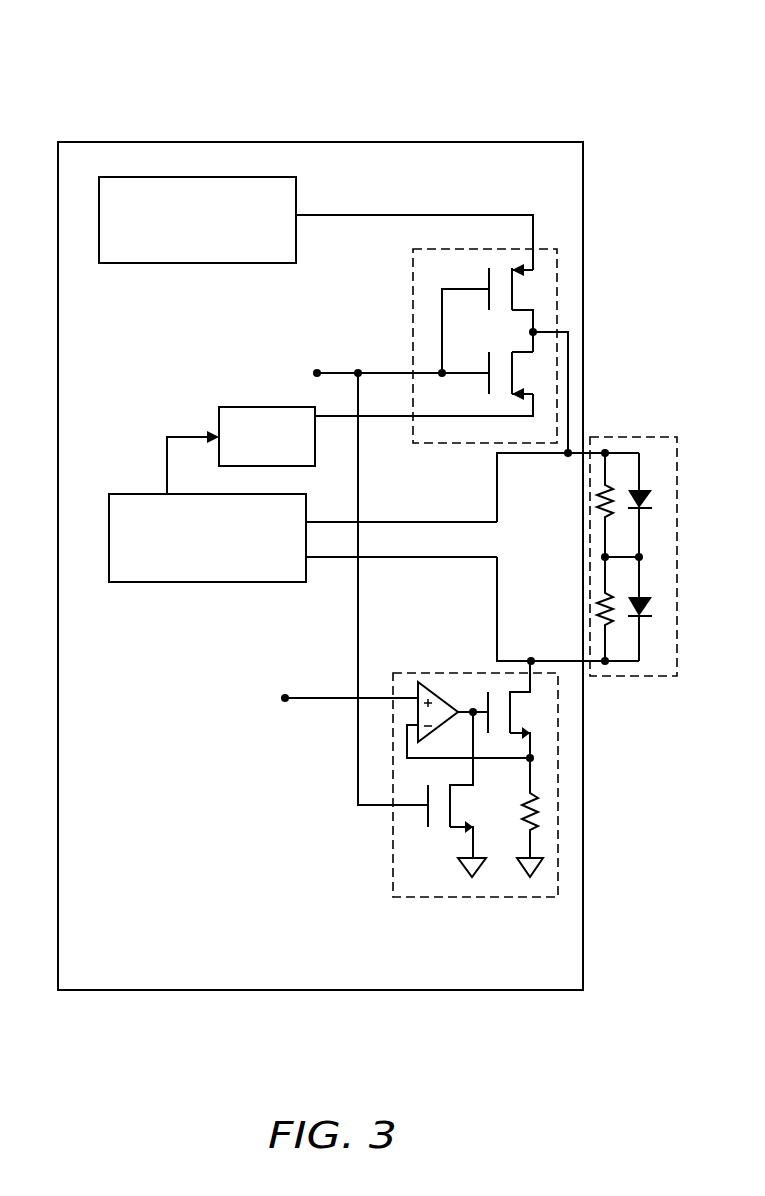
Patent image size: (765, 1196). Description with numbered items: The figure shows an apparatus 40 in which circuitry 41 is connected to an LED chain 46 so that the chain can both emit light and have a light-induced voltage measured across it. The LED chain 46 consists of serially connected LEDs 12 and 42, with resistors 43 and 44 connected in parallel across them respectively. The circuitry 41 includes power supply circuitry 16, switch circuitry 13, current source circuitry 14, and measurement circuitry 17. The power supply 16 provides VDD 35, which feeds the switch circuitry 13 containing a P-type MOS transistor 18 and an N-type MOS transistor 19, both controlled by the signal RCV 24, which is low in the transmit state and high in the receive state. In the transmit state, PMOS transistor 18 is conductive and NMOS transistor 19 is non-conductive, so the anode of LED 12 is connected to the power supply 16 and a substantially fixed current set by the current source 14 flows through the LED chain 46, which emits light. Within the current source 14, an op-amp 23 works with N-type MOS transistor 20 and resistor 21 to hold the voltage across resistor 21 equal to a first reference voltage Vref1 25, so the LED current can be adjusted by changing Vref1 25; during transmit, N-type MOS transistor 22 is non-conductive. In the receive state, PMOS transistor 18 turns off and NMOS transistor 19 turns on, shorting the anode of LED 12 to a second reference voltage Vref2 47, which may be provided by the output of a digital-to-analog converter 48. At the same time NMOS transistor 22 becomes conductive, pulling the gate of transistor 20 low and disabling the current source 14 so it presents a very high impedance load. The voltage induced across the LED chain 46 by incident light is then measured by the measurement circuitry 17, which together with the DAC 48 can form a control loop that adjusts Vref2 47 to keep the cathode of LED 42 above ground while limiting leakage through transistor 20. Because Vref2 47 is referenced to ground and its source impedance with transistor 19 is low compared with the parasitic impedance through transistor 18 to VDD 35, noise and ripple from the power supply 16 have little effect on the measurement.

The apparatus 40 is at (622, 62).
The circuitry 41 is at (267, 142).
The power supply circuitry 16 is at (168, 264).
The VDD 35 is at (395, 215).
The switch circuitry 13 is at (557, 260).
The P-type MOS transistor 18 is at (512, 295).
The N-type MOS transistor 19 is at (512, 378).
The RCV 24 is at (333, 370).
The digital-to-analog converter 48 is at (218, 418).
The second reference voltage (Vref2) 47 is at (375, 417).
The measurement circuitry 17 is at (195, 583).
The LED chain 46 is at (647, 437).
The resistor 43 is at (595, 507).
The resistor 44 is at (595, 617).
The LED 12 is at (652, 497).
The LED 42 is at (652, 603).
The first reference voltage (Vref1) 25 is at (285, 698).
The op-amp 23 is at (435, 687).
The N-type MOS transistor 22 is at (450, 825).
The N-type MOS transistor 20 is at (512, 703).
The resistor 21 is at (540, 797).
The current source circuitry 14 is at (480, 897).